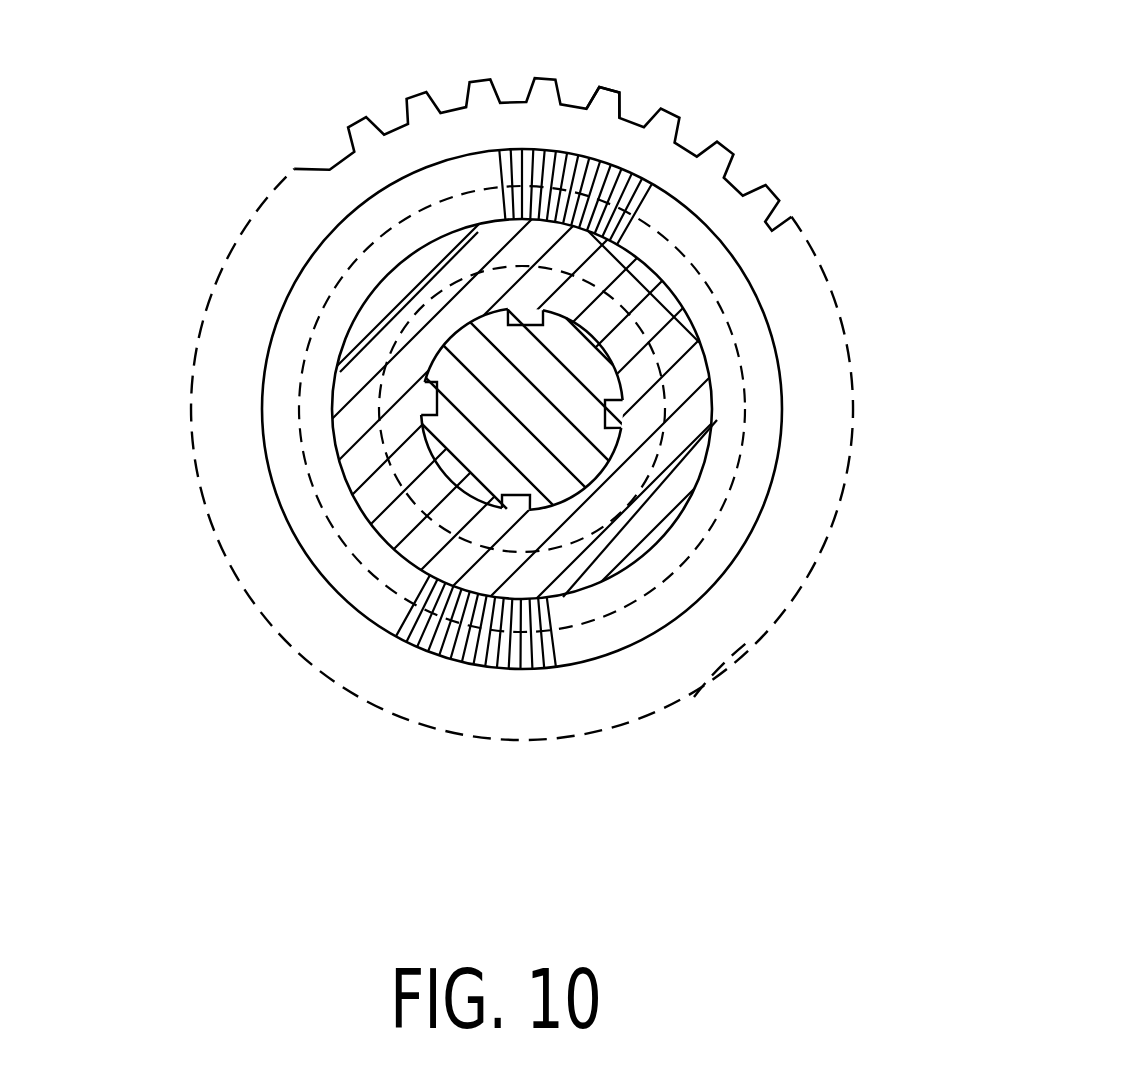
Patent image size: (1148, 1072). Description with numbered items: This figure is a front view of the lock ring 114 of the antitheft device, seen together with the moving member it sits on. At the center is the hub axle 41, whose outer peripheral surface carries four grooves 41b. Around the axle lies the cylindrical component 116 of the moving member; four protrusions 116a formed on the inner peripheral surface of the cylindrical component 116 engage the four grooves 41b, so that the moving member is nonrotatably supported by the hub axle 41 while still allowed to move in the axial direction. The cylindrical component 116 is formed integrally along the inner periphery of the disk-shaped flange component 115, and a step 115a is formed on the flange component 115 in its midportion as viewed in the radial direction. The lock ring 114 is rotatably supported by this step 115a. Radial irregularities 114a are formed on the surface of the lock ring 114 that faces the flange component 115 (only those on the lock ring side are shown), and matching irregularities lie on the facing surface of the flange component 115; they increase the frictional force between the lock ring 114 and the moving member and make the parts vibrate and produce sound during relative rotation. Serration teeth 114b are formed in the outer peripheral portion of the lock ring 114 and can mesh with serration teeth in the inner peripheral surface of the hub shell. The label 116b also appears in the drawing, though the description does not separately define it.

The hub axle 41 is at (553, 462).
The grooves 41b is at (433, 390).
The lock ring 114 is at (733, 224).
The radial irregularities 114a is at (457, 623).
The serration teeth 114b is at (605, 92).
The flange component 115 is at (567, 583).
The step 115a is at (687, 517).
The cylindrical component 116 is at (700, 342).
The protrusions 116a is at (620, 416).
The hub outer portion 116b is at (743, 655).